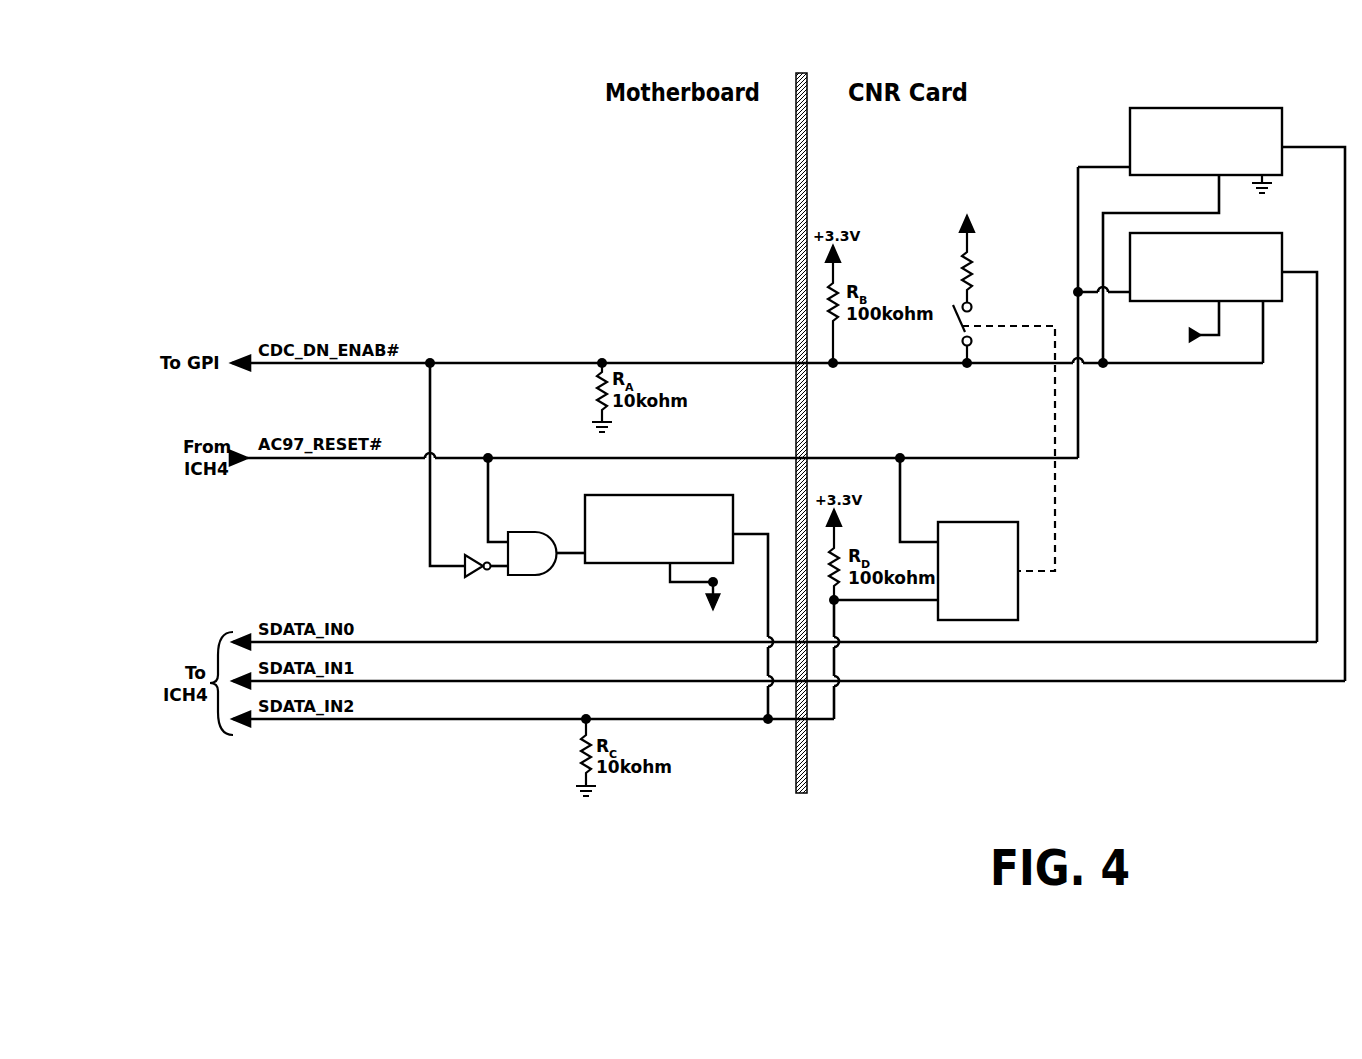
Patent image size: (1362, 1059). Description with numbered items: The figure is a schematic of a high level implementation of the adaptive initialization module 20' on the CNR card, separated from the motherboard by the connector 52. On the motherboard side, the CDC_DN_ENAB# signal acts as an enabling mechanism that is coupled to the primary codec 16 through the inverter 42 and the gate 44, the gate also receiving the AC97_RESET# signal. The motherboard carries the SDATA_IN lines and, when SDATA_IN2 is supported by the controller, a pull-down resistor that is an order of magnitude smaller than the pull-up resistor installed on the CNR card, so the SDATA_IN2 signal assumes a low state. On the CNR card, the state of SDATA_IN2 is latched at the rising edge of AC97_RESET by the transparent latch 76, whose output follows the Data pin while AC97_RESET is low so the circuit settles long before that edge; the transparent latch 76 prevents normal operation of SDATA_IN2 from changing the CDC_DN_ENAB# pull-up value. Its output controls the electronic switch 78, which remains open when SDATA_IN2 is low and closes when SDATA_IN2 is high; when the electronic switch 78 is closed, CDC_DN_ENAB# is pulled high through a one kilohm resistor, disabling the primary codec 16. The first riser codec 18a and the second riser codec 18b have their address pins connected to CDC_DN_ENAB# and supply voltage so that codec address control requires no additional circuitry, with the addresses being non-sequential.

The primary codec 16 is at (680, 495).
The first riser codec 18a is at (1278, 302).
The second riser codec 18b is at (1218, 108).
The adaptive initialization module 20' is at (1180, 592).
The inverter 42 is at (467, 580).
The gate 44 is at (550, 535).
The connector 52 is at (808, 775).
The transparent latch 76 is at (1018, 610).
The electronic switch 78 is at (958, 325).